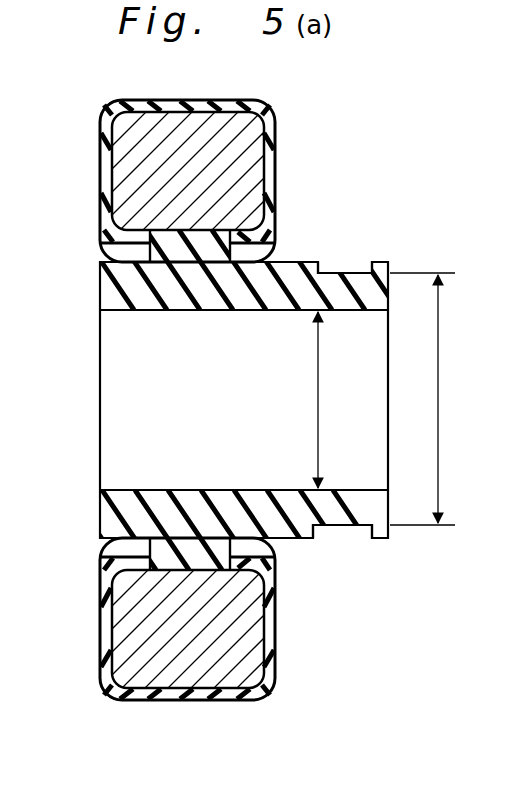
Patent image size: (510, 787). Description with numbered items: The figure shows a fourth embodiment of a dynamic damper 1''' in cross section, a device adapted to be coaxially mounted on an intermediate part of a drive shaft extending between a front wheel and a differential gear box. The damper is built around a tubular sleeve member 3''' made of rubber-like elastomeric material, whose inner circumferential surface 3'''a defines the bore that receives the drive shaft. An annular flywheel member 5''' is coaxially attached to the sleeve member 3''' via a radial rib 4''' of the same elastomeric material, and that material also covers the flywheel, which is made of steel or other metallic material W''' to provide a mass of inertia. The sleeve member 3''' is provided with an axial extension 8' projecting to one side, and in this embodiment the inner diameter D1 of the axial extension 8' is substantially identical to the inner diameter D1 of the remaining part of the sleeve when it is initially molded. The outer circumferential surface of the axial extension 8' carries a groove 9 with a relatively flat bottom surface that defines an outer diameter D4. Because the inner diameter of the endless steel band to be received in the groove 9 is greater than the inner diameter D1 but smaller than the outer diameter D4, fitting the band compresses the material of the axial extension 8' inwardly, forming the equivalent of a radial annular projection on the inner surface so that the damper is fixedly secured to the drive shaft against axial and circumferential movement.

The dynamic damper 1''' is at (233, 391).
The tubular sleeve member 3''' is at (221, 400).
The bore of hub sleeve 3'''a is at (204, 400).
The radial rib 4''' is at (129, 400).
The annular flywheel member 5''' is at (138, 400).
The metallic material W''' is at (186, 427).
The groove 9 is at (346, 272).
The axial extension 8' is at (335, 563).
The inner diameter D1 is at (302, 400).
The outer diameter D4 is at (422, 399).